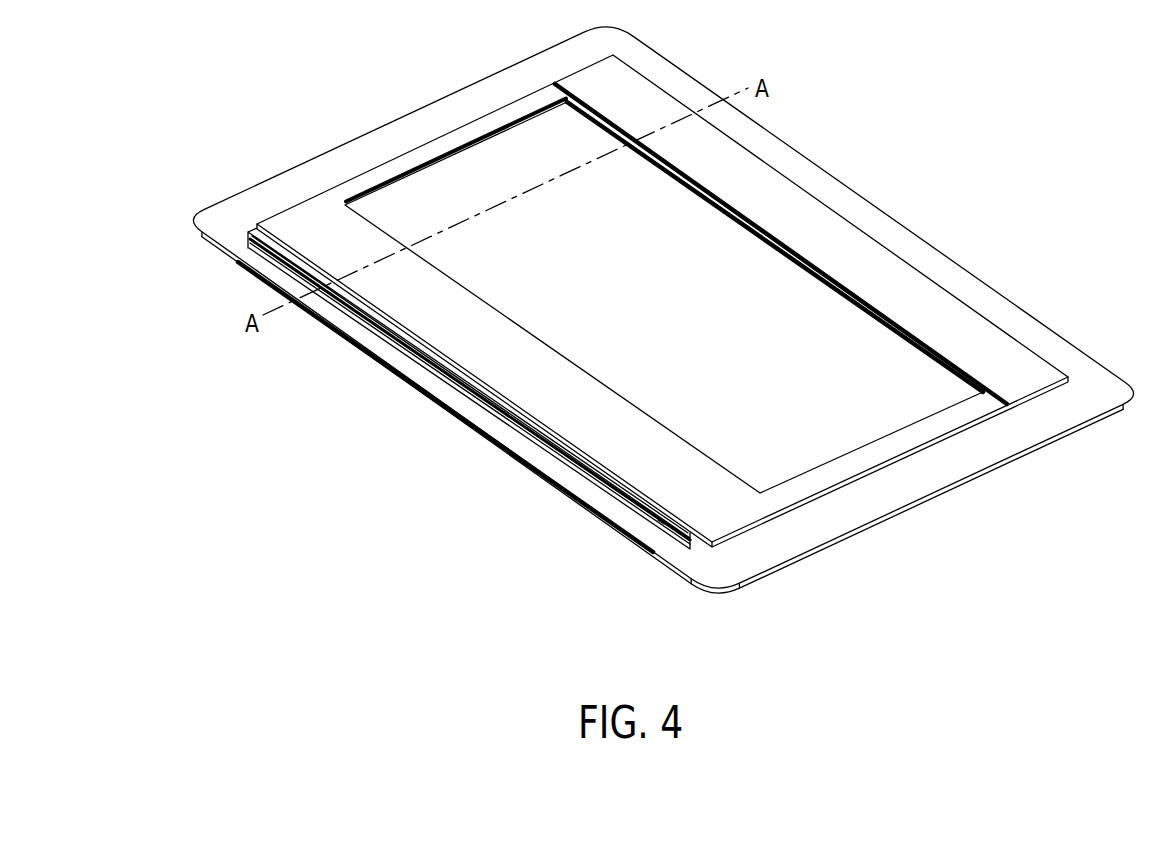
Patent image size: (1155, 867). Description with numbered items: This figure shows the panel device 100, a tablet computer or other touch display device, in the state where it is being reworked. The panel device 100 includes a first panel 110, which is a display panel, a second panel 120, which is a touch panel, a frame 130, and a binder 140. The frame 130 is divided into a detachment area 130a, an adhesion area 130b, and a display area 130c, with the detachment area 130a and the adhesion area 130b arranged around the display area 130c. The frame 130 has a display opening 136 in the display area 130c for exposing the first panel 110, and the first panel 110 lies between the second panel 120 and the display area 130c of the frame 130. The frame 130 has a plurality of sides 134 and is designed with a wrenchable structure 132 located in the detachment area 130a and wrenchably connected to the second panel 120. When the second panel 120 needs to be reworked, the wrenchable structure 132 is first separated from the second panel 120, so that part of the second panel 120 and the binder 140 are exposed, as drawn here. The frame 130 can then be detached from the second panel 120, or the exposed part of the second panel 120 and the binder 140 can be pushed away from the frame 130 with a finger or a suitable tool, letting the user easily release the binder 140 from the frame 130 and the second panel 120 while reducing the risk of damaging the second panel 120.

The panel device 100 is at (928, 131).
The first panel 110 is at (867, 457).
The second panel 120 is at (238, 265).
The frame 130 is at (627, 448).
The detachment area 130a is at (667, 538).
The adhesion area 130b is at (830, 525).
The display area 130c is at (905, 413).
The wrenchable structure 132 is at (660, 521).
The sides 134 is at (635, 503).
The display opening 136 is at (953, 372).
The binder 140 is at (587, 490).